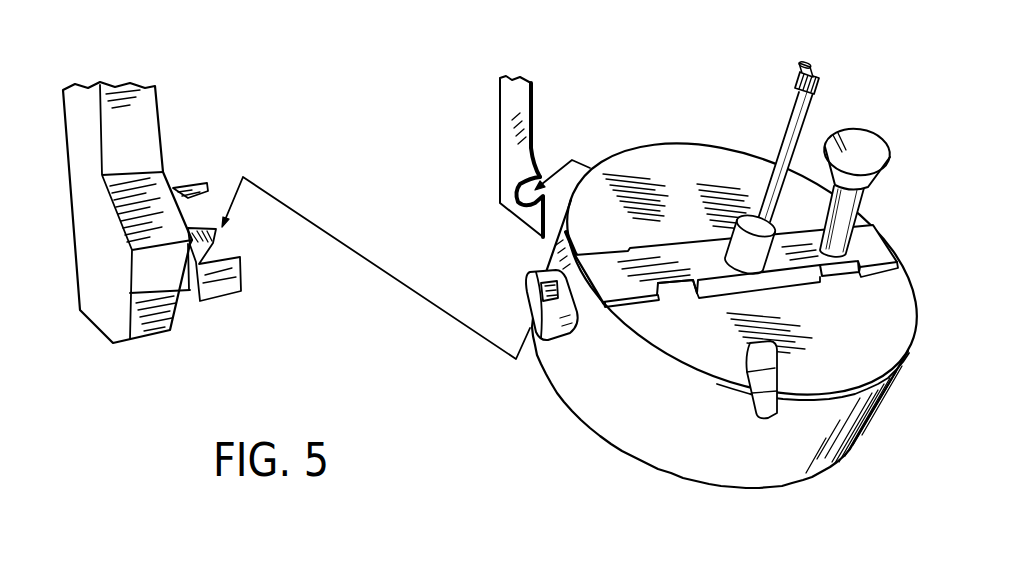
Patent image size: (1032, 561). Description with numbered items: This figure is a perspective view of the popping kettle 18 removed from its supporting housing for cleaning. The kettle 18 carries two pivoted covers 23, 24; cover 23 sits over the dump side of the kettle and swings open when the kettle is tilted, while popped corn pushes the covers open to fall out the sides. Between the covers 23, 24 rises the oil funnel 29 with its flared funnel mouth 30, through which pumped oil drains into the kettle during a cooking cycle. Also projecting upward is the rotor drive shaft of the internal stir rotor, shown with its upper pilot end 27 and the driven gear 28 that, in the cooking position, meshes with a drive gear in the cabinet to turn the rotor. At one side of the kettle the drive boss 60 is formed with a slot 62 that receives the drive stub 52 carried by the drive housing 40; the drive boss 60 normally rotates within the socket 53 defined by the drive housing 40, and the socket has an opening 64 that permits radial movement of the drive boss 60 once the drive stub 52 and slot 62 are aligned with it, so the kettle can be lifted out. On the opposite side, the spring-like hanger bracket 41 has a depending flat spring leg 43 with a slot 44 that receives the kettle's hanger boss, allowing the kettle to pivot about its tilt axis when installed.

The popping kettle 18 is at (626, 460).
The cover 23 is at (824, 326).
The cover 24 is at (688, 206).
The upper pilot end 27 is at (816, 70).
The driven gear 28 is at (795, 80).
The oil funnel 29 is at (862, 208).
The flared funnel mouth 30 is at (878, 147).
The drive housing 40 is at (143, 116).
The spring-like hanger bracket 41 is at (508, 117).
The flat spring leg 43 is at (534, 93).
The slot 44 is at (516, 205).
The drive stub 52 is at (218, 243).
The socket 53 is at (187, 191).
The drive boss 60 is at (522, 289).
The slot 62 is at (540, 293).
The opening 64 is at (207, 197).